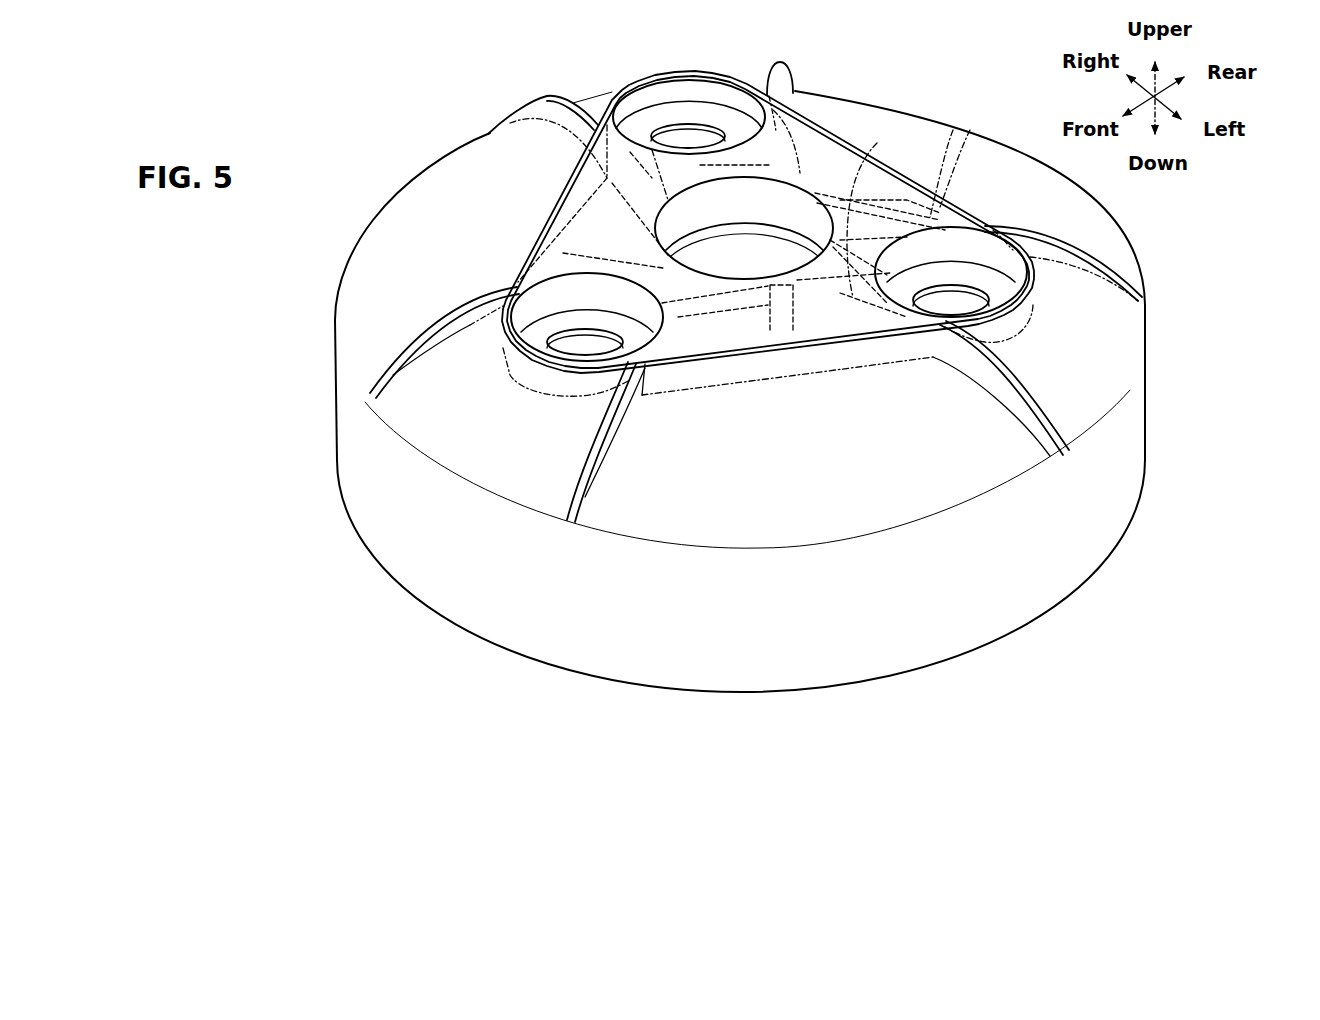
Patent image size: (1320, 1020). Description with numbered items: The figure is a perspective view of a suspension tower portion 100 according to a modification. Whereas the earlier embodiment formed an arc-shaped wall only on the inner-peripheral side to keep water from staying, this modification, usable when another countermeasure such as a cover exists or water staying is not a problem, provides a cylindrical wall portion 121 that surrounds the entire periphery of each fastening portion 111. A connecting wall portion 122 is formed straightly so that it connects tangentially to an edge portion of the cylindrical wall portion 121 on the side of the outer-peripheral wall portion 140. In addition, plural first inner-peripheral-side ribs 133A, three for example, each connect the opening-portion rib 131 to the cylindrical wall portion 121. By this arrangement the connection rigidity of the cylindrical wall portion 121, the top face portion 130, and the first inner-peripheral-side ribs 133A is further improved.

The suspension tower portion 100 is at (462, 124).
The fastening portion 111 is at (669, 111).
The cylindrical wall portion 121 is at (1033, 313).
The connecting wall portion 122 is at (783, 373).
The top face portion 130 is at (580, 203).
The opening-portion rib 131 is at (746, 218).
The first inner-peripheral-side rib 133A is at (850, 190).
The outer-peripheral wall portion 140 is at (393, 498).